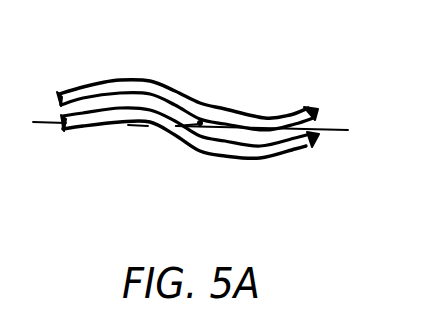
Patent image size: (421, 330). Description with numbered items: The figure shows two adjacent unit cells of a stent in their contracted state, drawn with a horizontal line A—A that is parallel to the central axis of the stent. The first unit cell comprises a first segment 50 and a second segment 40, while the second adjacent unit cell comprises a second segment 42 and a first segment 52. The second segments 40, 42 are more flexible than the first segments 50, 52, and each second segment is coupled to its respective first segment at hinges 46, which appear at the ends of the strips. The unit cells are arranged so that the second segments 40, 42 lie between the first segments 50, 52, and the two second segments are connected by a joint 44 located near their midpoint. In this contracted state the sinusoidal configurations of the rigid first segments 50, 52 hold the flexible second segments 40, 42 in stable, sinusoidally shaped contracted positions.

The second segment 40 is at (186, 83).
The second segment 42 is at (186, 144).
The joint 44 is at (204, 121).
The hinges 46 is at (60, 96).
The first segment 50 is at (135, 83).
The first segment 52 is at (133, 127).
The horizontal line A— A is at (187, 130).